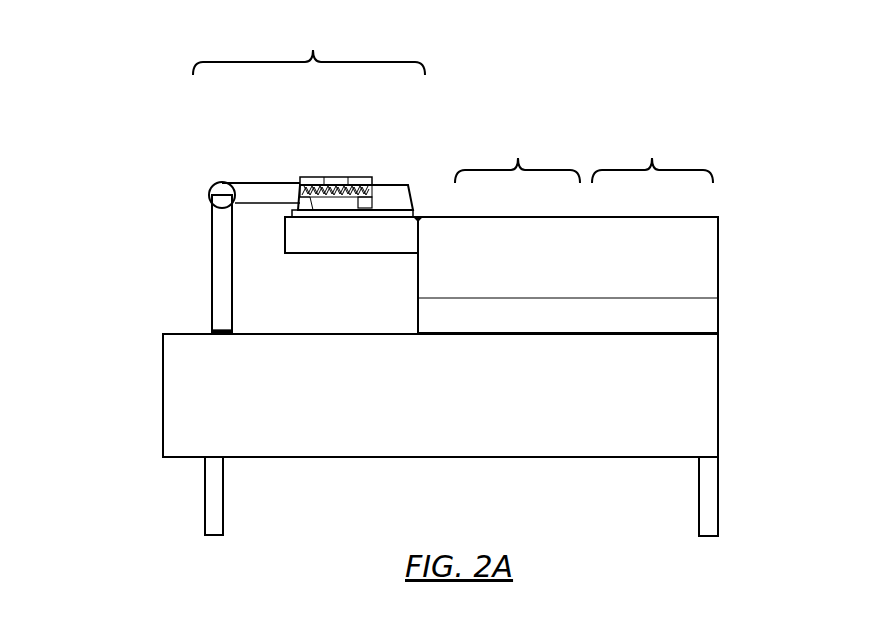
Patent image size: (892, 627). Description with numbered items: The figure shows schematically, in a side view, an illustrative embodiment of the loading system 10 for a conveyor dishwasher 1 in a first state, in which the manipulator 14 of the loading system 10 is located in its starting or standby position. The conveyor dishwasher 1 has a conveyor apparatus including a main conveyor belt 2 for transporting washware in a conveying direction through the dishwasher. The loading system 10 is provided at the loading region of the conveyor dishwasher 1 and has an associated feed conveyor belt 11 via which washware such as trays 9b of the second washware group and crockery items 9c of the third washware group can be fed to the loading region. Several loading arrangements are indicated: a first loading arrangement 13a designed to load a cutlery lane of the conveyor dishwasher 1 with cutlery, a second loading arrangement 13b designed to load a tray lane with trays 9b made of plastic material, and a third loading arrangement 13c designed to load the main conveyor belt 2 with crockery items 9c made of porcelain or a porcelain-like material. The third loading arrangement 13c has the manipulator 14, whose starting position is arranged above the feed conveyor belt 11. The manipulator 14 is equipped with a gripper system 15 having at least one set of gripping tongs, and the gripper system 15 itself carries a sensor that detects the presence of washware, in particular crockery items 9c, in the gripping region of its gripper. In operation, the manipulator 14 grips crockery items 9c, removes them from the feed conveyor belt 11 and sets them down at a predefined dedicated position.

The loading system 10 is at (135, 212).
The conveyor dishwasher 1 is at (635, 394).
The main conveyor belt 2 is at (282, 333).
The feed conveyor belt 11 is at (287, 233).
The manipulator 14 is at (255, 190).
The washware of the second washware group 9b is at (410, 213).
The washware of the third washware group 9c is at (298, 187).
The gripper system 15 is at (338, 187).
The third loading arrangement 13c is at (309, 46).
The first loading arrangement 13a is at (517, 153).
The second loading arrangement 13b is at (652, 153).